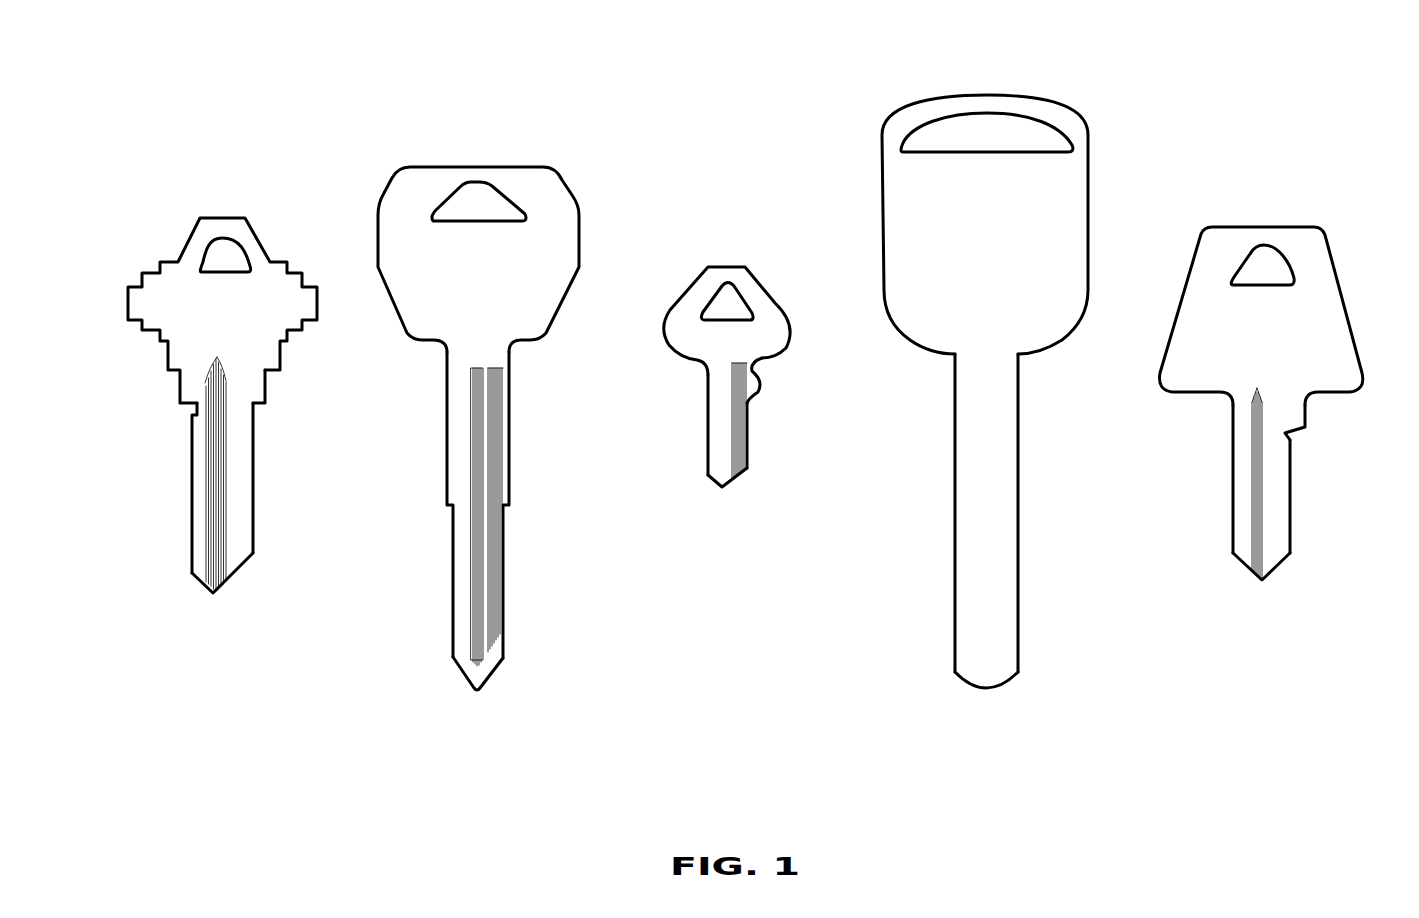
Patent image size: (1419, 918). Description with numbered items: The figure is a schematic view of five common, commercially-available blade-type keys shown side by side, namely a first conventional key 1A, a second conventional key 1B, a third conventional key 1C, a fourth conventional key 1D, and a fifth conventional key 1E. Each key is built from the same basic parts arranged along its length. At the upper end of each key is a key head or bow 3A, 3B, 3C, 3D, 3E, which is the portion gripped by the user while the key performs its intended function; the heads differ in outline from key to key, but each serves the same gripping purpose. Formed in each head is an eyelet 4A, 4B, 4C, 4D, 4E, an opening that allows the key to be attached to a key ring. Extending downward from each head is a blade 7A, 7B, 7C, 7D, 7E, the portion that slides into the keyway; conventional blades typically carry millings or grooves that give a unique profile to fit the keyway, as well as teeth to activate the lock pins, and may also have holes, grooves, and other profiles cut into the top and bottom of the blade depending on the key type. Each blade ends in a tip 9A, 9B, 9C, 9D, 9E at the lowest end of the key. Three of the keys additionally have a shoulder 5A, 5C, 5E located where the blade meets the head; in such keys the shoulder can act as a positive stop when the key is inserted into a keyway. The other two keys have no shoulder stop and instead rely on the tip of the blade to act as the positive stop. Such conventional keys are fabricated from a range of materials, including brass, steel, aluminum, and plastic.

The conventional key 1A is at (210, 195).
The key head or bow 3A is at (240, 325).
The eyelet 4A is at (223, 254).
The shoulder 5A is at (267, 404).
The blade 7A is at (240, 478).
The tip 9A is at (214, 606).
The conventional key 1B is at (478, 150).
The key head or bow 3B is at (499, 293).
The eyelet 4B is at (469, 198).
The blade 7B is at (501, 483).
The tip 9B is at (478, 700).
The conventional key 1C is at (714, 241).
The key head or bow 3C is at (712, 356).
The eyelet 4C is at (730, 303).
The shoulder 5C is at (746, 400).
The blade 7C is at (733, 430).
The tip 9C is at (724, 498).
The conventional key 1D is at (970, 68).
The key head or bow 3D is at (968, 256).
The eyelet 4D is at (940, 135).
The blade 7D is at (1008, 490).
The tip 9D is at (986, 700).
The conventional key 1E is at (1251, 201).
The key head or bow 3E is at (1281, 353).
The eyelet 4E is at (1260, 263).
The shoulder 5E is at (1296, 430).
The blade 7E is at (1280, 493).
The tip 9E is at (1263, 593).